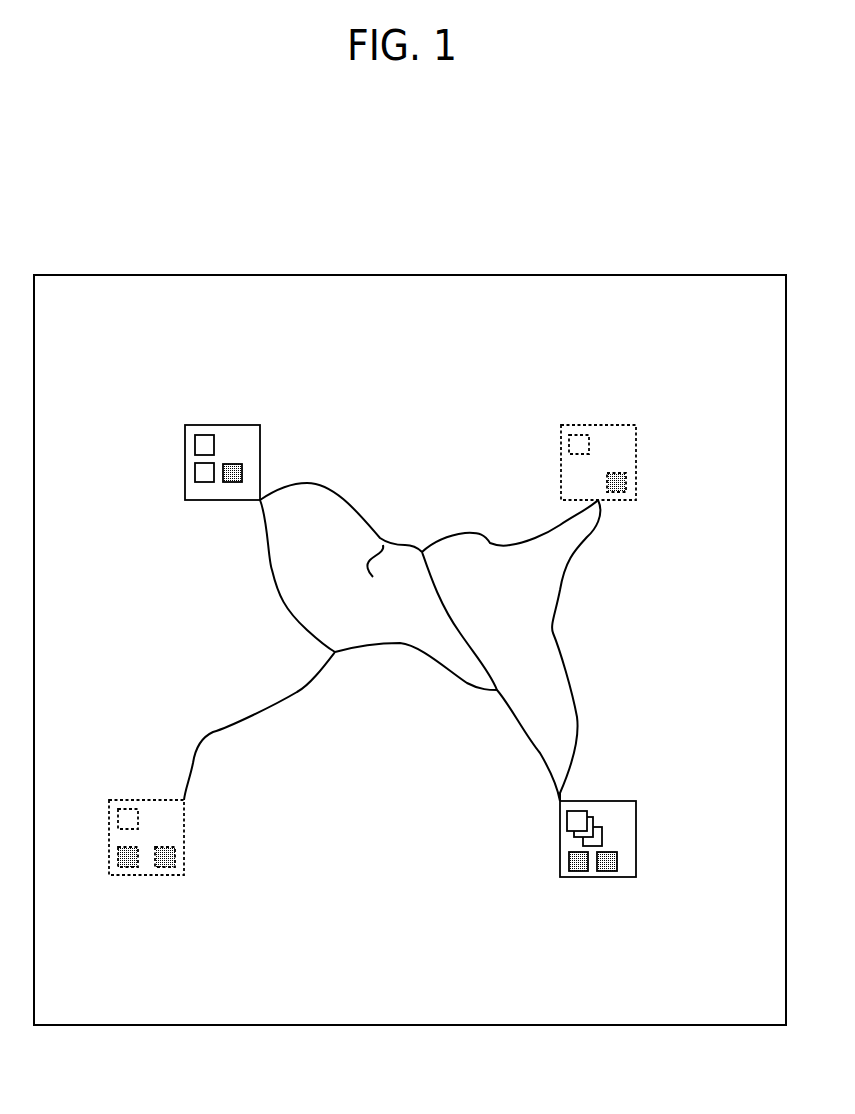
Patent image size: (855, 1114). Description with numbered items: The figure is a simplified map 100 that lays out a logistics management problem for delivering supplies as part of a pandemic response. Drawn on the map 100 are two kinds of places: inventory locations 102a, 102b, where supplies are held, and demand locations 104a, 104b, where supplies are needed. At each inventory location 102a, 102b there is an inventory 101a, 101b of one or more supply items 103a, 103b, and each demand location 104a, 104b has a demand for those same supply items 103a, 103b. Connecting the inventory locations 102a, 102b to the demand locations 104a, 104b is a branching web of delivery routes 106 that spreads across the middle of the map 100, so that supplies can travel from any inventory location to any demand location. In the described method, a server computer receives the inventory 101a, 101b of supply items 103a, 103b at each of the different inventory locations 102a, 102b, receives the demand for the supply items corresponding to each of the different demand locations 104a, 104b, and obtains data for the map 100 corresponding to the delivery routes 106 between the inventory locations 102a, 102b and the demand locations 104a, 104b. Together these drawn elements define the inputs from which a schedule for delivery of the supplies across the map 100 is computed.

The map 100 is at (370, 350).
The inventory 101a is at (195, 452).
The inventory 101b is at (230, 483).
The inventory location 102a is at (261, 440).
The inventory location 102b is at (637, 823).
The supply item 103a is at (575, 435).
The supply item 103b is at (626, 478).
The demand location 104a is at (560, 466).
The demand location 104b is at (132, 800).
The delivery routes 106 is at (300, 623).